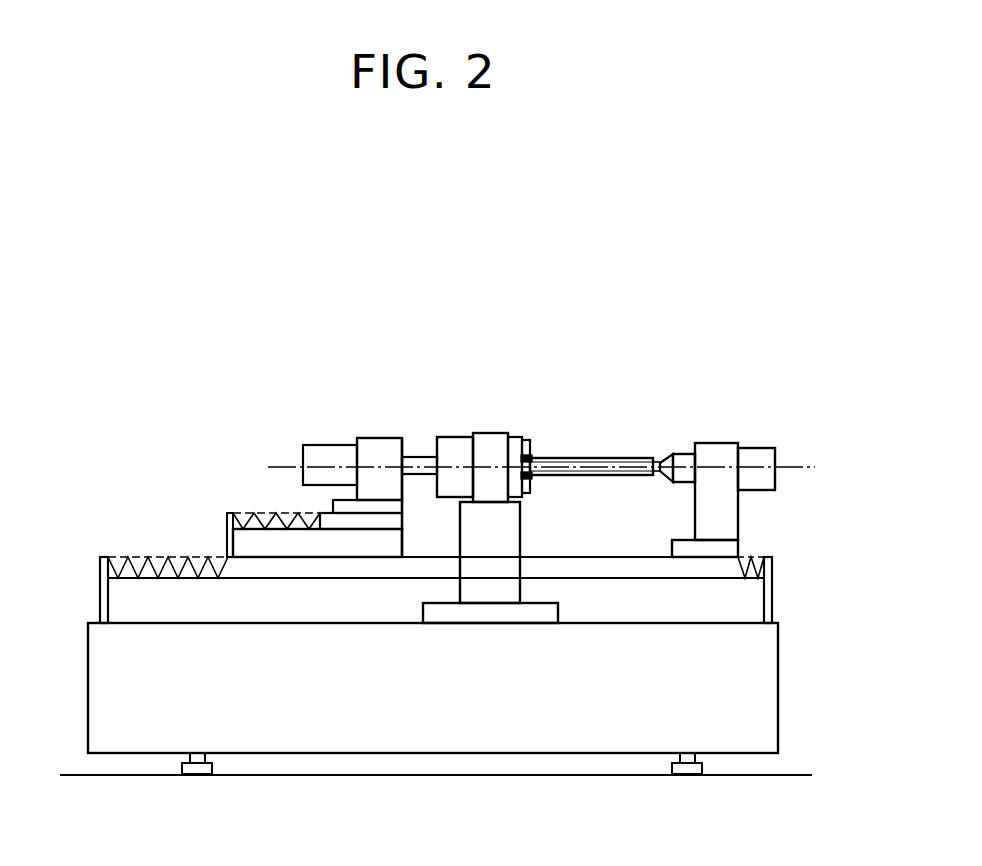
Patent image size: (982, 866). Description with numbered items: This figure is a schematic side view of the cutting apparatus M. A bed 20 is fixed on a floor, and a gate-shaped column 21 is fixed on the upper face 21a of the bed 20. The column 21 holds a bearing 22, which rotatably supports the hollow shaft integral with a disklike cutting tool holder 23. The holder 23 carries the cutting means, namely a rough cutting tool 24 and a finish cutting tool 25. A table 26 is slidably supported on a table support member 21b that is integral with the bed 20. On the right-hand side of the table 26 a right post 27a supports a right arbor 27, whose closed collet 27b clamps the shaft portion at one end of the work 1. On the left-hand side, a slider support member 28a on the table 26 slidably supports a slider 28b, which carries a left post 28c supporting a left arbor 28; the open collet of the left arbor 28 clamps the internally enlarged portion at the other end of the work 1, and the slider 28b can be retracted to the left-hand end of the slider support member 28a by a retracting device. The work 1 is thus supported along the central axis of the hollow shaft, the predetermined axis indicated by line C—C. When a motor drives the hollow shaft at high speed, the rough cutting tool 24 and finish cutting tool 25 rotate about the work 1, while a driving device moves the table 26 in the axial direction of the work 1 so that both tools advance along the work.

The work 1 is at (616, 462).
The bed 20 is at (765, 738).
The gate-shaped column 21 is at (485, 597).
The upper face 21a is at (722, 622).
The table support member 21b is at (753, 607).
The bearing 22 is at (488, 440).
The cutting tool holder 23 is at (513, 441).
The rough cutting tool 24 is at (533, 484).
The finish cutting tool 25 is at (531, 447).
The table 26 is at (727, 572).
The right arbor 27 is at (684, 456).
The right post 27a is at (733, 520).
The closed collet 27b is at (657, 462).
The left arbor 28 is at (418, 455).
The slider support member 28a is at (285, 548).
The slider 28b is at (328, 521).
The left post 28c is at (373, 443).
The line C— C is at (539, 467).
The cutting apparatus M is at (138, 536).